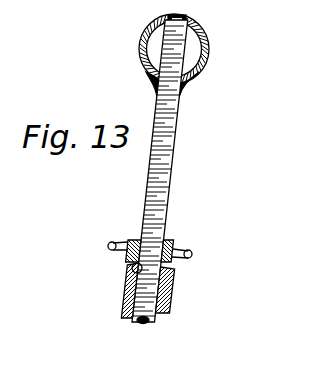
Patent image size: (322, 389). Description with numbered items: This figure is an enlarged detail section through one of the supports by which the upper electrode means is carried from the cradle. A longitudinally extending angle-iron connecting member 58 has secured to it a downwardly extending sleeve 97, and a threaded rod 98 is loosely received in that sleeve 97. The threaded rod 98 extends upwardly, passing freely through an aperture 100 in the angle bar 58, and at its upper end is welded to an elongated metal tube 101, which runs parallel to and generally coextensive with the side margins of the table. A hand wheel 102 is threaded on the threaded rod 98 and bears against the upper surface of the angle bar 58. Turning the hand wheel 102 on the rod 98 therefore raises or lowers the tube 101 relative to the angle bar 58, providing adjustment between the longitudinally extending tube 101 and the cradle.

The elongated metal tube 101 is at (208, 52).
The threaded rod 98 is at (170, 172).
The hand wheel 102 is at (190, 252).
The aperture 100 is at (132, 270).
The sleeve 97 is at (123, 292).
The angle-iron connecting member 58 is at (176, 287).